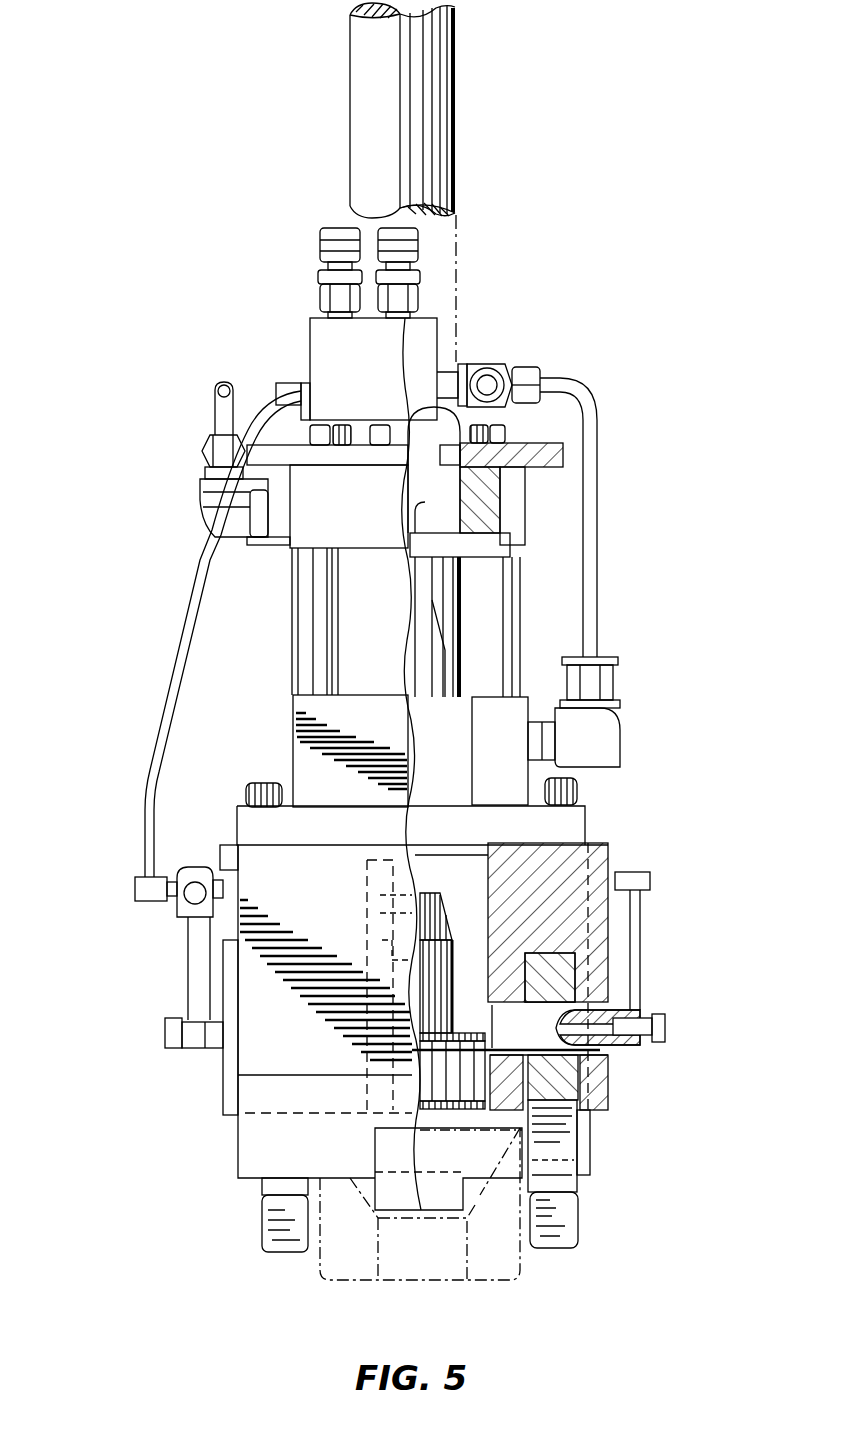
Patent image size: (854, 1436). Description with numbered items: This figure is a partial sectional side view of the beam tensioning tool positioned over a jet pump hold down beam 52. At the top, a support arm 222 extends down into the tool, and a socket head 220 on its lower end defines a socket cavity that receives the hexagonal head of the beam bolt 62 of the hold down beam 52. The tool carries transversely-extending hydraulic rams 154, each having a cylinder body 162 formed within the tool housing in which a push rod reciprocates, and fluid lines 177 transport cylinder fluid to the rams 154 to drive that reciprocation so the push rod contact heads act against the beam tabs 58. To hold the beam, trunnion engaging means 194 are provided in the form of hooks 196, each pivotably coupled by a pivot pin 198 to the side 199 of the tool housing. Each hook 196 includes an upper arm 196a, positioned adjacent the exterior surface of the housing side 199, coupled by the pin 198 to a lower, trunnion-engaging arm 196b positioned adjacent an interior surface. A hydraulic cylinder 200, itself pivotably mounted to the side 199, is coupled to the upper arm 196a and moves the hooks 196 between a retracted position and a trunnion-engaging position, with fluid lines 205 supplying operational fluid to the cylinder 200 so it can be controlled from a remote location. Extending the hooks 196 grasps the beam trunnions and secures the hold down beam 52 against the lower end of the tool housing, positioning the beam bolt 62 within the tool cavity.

The support arm 222 is at (428, 135).
The rams 154 is at (620, 424).
The fluid lines 177 is at (592, 525).
The fluid lines 205 is at (186, 652).
The socket head 220 is at (475, 722).
The trunnion engaging means 194 is at (125, 876).
The hydraulic cylinder 200 is at (195, 868).
The cylinder body 162 is at (605, 860).
The beam bolt 62 is at (455, 955).
The upper arm 196a is at (640, 925).
The hooks 196 is at (186, 953).
The pivot pin 198 is at (668, 1028).
The side 199 is at (230, 1093).
The lower trunnion-engaging arm 196b is at (572, 1220).
The jet pump hold down beam 52 is at (325, 1258).
The beam tabs 58 is at (398, 1270).